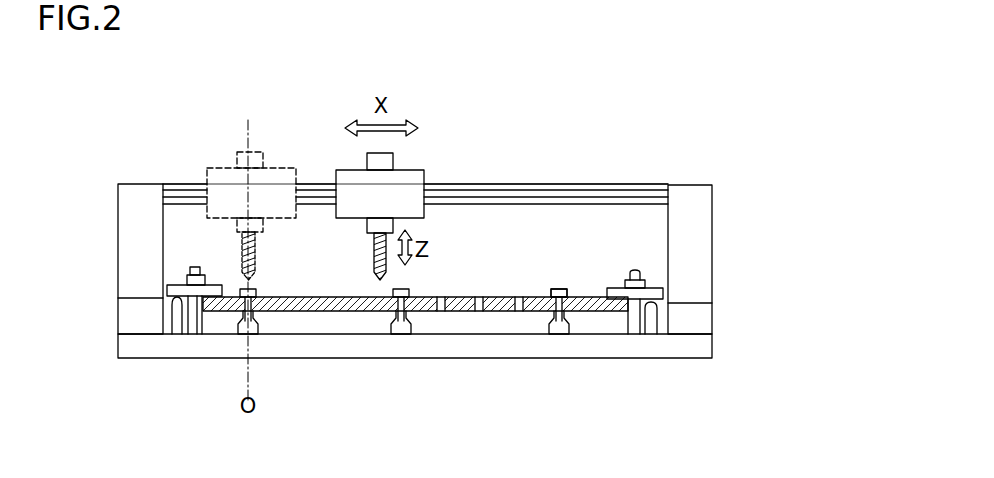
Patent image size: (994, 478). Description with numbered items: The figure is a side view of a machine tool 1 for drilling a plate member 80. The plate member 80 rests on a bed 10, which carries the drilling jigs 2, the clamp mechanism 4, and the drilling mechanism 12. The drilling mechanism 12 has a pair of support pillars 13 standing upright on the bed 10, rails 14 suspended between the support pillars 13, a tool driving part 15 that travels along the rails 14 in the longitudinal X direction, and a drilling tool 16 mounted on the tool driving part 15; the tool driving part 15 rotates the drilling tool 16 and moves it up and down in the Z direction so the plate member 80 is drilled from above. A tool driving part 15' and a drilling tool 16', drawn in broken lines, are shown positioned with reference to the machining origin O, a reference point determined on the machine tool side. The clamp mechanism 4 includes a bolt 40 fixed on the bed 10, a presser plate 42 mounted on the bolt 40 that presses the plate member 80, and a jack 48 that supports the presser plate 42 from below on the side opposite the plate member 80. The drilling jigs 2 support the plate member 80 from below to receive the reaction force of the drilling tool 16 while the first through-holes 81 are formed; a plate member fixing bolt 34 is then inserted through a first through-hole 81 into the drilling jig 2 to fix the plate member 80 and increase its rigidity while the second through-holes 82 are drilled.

The machine tool 1 is at (484, 148).
The drilling jig 2 is at (243, 334).
The clamp mechanism 4 is at (170, 285).
The bed 10 is at (302, 358).
The drilling mechanism 12 is at (673, 184).
The support pillars 13 is at (135, 184).
The rails 14 is at (602, 184).
The tool driving part 15 is at (362, 177).
The tool driving part 15' is at (233, 174).
The drilling tool 16 is at (357, 257).
The drilling tool 16' is at (220, 257).
The plate member fixing bolt 34 is at (558, 290).
The bolt 40 is at (632, 334).
The presser plate 42 is at (617, 288).
The jack 48 is at (660, 318).
The plate member 80 is at (457, 313).
The first through-holes 81 is at (402, 327).
The second through-holes 82 is at (355, 313).